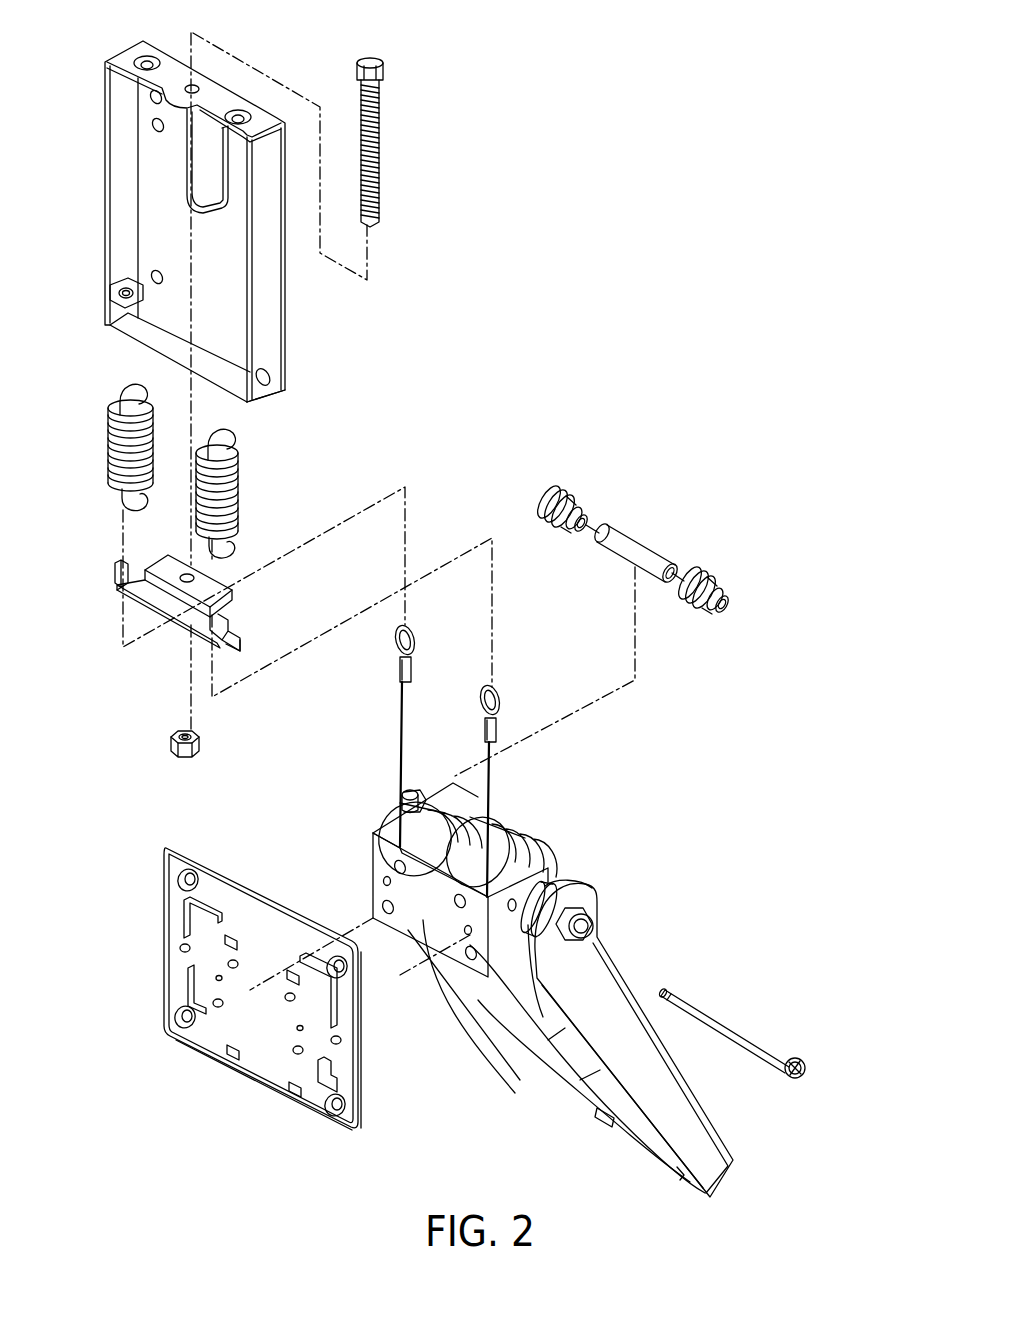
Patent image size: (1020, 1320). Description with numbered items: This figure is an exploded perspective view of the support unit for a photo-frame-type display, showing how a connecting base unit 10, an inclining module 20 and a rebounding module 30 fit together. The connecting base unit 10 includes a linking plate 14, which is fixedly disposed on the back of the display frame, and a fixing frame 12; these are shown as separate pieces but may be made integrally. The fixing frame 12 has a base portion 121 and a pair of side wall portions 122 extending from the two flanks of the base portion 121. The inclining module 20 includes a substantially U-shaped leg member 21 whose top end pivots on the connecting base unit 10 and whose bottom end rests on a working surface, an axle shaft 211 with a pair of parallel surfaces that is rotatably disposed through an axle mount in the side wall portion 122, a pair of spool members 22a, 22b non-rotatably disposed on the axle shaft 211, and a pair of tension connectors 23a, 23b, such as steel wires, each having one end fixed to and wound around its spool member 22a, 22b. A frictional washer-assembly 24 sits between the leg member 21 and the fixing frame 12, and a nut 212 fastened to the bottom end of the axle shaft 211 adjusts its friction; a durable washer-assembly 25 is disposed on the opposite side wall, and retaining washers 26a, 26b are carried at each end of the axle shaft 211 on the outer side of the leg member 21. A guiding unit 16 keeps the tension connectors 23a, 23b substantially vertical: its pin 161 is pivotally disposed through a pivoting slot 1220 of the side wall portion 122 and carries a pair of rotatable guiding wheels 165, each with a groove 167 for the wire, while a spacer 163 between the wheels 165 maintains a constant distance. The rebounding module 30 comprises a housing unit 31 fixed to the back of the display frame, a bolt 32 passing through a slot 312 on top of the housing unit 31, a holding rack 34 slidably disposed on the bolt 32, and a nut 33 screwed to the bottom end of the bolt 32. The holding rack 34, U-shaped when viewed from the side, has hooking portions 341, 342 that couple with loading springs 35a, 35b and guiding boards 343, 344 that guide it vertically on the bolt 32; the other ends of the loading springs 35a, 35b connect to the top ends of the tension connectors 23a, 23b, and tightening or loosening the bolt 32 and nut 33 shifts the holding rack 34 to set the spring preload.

The connecting base unit 10 is at (214, 1004).
The fixing frame 12 is at (416, 940).
The linking plate 14 is at (253, 1087).
The guiding unit 16 is at (655, 743).
The inclining module 20 is at (639, 1035).
The leg member 21 is at (703, 1147).
The spool member 22a is at (500, 858).
The spool member 22b is at (460, 852).
The tension connector 23a is at (493, 778).
The tension connector 23b is at (398, 713).
The frictional washer-assembly 24 is at (440, 805).
The durable washer-assembly 25 is at (558, 880).
The retaining washer 26a is at (555, 947).
The retaining washer 26b is at (400, 795).
The rebounding module 30 is at (410, 142).
The housing unit 31 is at (221, 202).
The bolt 32 is at (380, 112).
The nut 33 is at (170, 745).
The holding rack 34 is at (190, 640).
The loading spring 35a is at (236, 498).
The loading spring 35b is at (115, 417).
The base portion 121 is at (427, 923).
The side wall portion 122 is at (373, 833).
The pin 161 is at (712, 1022).
The spacer 163 is at (636, 550).
The guiding wheel 165 is at (575, 502).
The groove 167 is at (552, 500).
The axle shaft 211 is at (594, 923).
The nut 212 is at (593, 893).
The slot 312 is at (188, 84).
The hooking portion 341 is at (229, 635).
The hooking portion 342 is at (115, 583).
The guiding board 343 is at (223, 590).
The guiding board 344 is at (239, 651).
The pivoting slot 1220 is at (512, 912).